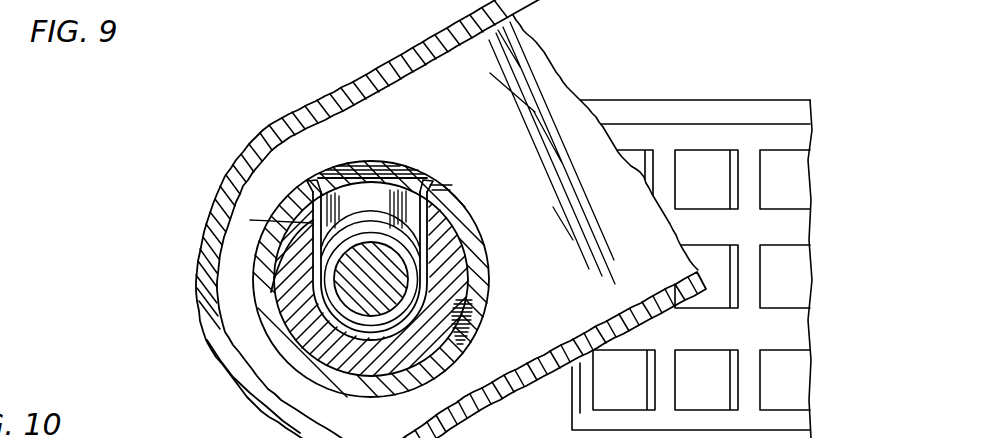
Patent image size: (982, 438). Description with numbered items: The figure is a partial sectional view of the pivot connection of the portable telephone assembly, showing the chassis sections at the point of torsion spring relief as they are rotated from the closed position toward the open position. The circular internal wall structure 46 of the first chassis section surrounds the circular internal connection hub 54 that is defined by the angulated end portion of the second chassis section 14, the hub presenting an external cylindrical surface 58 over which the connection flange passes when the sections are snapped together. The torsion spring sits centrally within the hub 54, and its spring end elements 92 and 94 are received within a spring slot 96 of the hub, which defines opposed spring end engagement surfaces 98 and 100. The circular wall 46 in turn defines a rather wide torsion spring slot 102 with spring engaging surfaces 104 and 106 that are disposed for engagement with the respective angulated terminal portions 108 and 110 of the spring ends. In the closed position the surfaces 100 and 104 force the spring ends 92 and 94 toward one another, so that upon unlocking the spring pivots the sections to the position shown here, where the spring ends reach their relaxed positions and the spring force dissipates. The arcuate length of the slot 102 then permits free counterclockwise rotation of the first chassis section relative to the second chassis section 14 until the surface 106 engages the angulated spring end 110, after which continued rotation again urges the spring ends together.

The second chassis section 14 is at (712, 100).
The circular internal wall structure 46 is at (267, 258).
The circular internal connection hub 54 is at (467, 300).
The external cylindrical surface 58 is at (467, 262).
The spring end element 92 is at (310, 206).
The spring end element 94 is at (422, 240).
The spring slot 96 is at (368, 193).
The spring end engagement surface 98 is at (250, 220).
The spring end engagement surface 100 is at (416, 208).
The torsion spring slot 102 is at (450, 347).
The spring engaging surface 104 is at (324, 180).
The spring engaging surface 106 is at (427, 367).
The angulated terminal portion 108 is at (313, 190).
The angulated terminal portion 110 is at (430, 186).